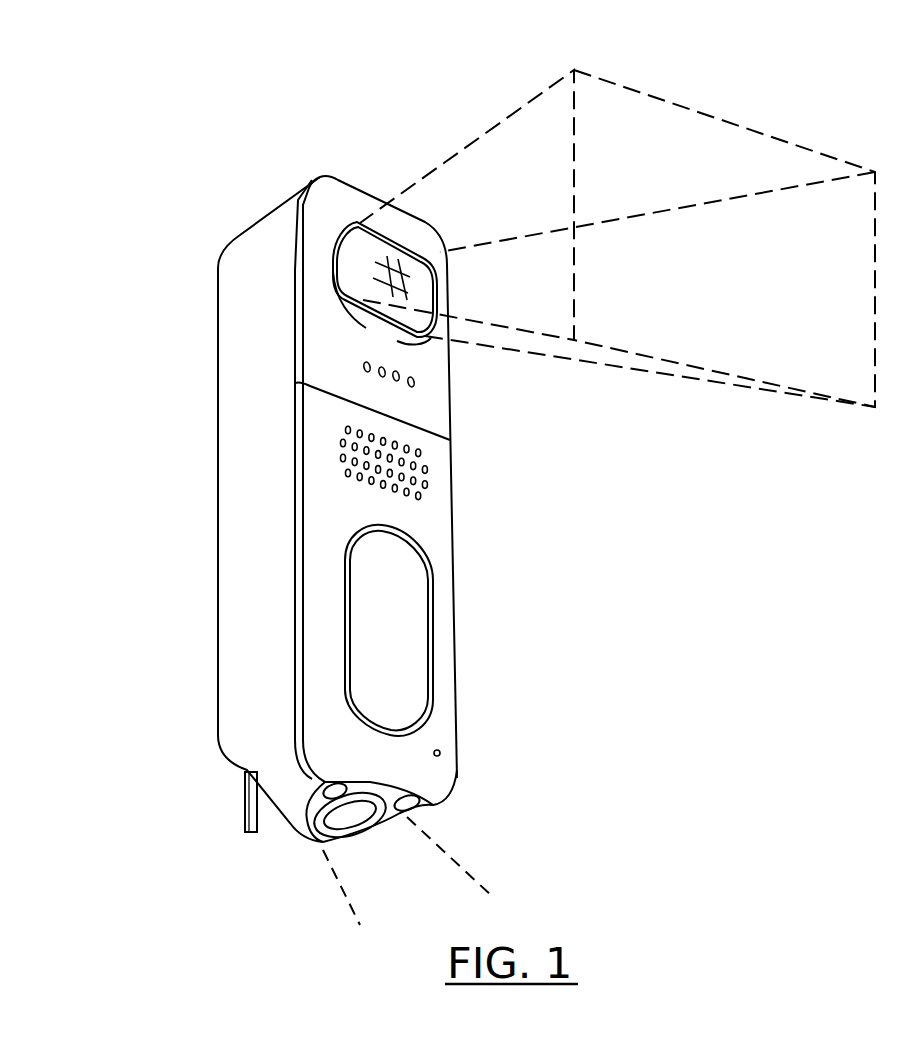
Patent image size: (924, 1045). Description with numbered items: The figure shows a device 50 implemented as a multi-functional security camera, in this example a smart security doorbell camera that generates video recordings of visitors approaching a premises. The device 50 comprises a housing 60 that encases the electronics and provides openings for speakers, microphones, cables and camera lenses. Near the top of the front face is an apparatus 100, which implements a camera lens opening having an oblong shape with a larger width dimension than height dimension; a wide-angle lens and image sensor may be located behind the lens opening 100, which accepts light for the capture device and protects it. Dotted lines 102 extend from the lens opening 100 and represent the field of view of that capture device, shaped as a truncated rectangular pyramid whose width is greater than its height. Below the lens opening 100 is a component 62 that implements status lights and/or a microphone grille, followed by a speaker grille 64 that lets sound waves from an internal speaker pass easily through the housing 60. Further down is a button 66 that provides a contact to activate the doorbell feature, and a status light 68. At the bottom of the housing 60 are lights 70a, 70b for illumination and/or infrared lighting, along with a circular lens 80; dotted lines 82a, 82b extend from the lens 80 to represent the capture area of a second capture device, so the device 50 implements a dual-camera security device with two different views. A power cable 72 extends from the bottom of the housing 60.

The device 50 is at (423, 225).
The housing 60 is at (242, 237).
The component (status lights and/or microphone grille) 62 is at (413, 385).
The speaker grille 64 is at (424, 486).
The button 66 is at (433, 590).
The status light 68 is at (441, 755).
The light 70a is at (338, 785).
The light 70b is at (413, 807).
The power cable 72 is at (243, 801).
The lens 80 is at (355, 822).
The dotted line 82a is at (340, 887).
The dotted line 82b is at (493, 897).
The apparatus (camera lens opening) 100 is at (447, 290).
The dotted lines (field of view) 102 is at (460, 152).